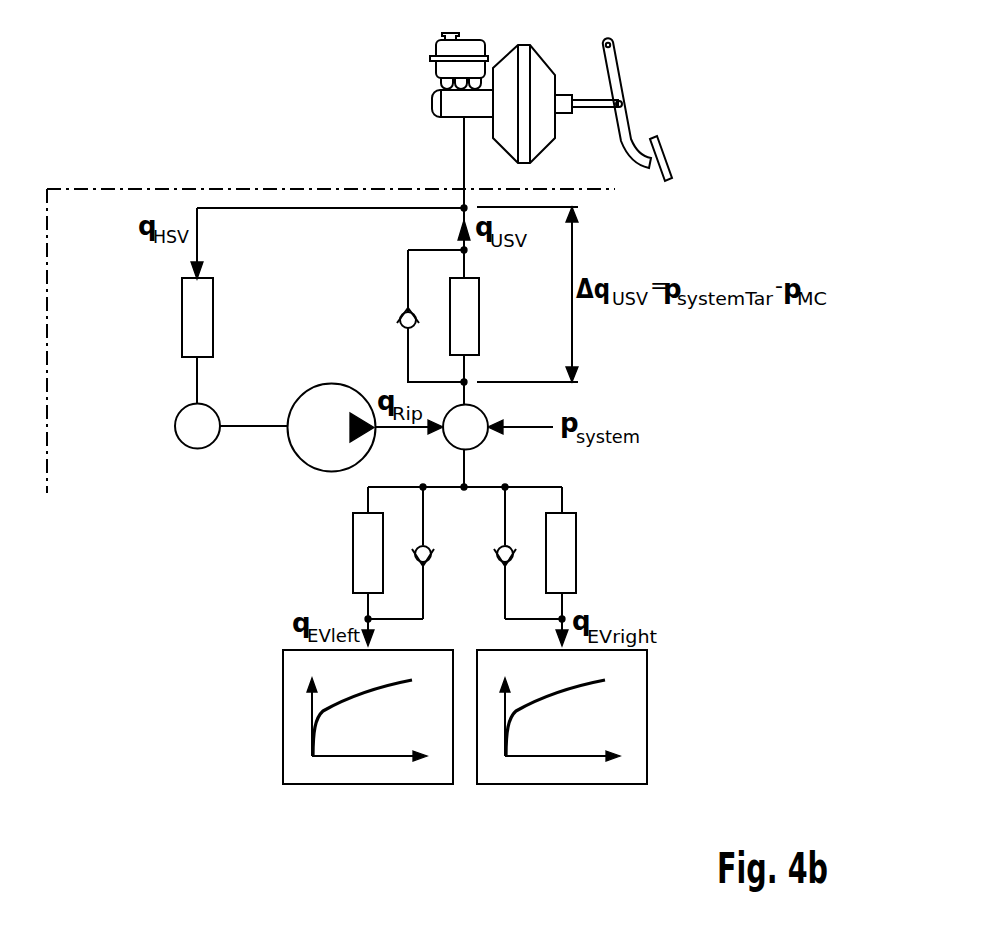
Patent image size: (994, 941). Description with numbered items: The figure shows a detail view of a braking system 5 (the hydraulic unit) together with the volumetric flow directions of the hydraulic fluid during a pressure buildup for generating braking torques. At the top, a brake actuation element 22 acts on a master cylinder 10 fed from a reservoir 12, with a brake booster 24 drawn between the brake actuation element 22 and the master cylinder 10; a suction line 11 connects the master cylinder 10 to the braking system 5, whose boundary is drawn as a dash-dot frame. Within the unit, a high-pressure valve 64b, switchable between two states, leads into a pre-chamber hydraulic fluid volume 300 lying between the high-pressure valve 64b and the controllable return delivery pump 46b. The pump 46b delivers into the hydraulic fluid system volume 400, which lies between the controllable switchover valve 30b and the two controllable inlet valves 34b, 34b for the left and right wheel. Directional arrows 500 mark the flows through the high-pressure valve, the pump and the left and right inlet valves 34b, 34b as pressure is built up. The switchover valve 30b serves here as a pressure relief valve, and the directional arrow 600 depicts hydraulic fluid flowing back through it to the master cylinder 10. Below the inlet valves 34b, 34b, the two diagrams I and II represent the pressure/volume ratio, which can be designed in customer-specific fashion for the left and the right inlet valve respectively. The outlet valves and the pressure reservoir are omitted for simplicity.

The braking system 5 is at (86, 188).
The master cylinder 10 is at (433, 106).
The suction line 11 is at (438, 172).
The reservoir 12 is at (436, 50).
The brake actuation element 22 is at (618, 87).
The brake booster 24 is at (540, 62).
The switchover valve 30b is at (479, 345).
The inlet valve 34b is at (353, 579).
The pump 46b is at (297, 457).
The high-pressure valve 64b is at (213, 345).
The pre-chamber hydraulic fluid volume 300 is at (189, 451).
The hydraulic fluid system volume 400 is at (478, 447).
The directional arrows 500 is at (197, 243).
The directional arrow 600 is at (460, 232).
The pressure/volume diagram I is at (283, 716).
The pressure/volume diagram II is at (647, 716).